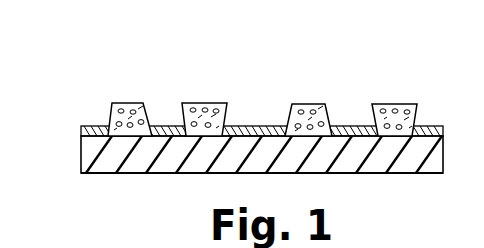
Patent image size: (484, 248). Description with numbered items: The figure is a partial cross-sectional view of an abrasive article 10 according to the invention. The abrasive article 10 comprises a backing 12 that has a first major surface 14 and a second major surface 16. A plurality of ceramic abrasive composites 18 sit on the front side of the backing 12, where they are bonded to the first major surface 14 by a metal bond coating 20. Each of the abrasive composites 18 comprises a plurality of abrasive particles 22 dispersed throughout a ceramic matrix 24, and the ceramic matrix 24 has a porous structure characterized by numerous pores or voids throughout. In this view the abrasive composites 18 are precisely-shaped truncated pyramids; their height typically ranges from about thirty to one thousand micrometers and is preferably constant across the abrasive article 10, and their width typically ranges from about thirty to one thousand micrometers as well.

The abrasive article 10 is at (203, 56).
The backing 12 is at (90, 154).
The first major surface 14 is at (432, 126).
The second major surface 16 is at (344, 175).
The ceramic abrasive composites 18 is at (305, 103).
The metal bond coating 20 is at (166, 124).
The abrasive particles 22 is at (330, 118).
The ceramic matrix 24 is at (318, 106).